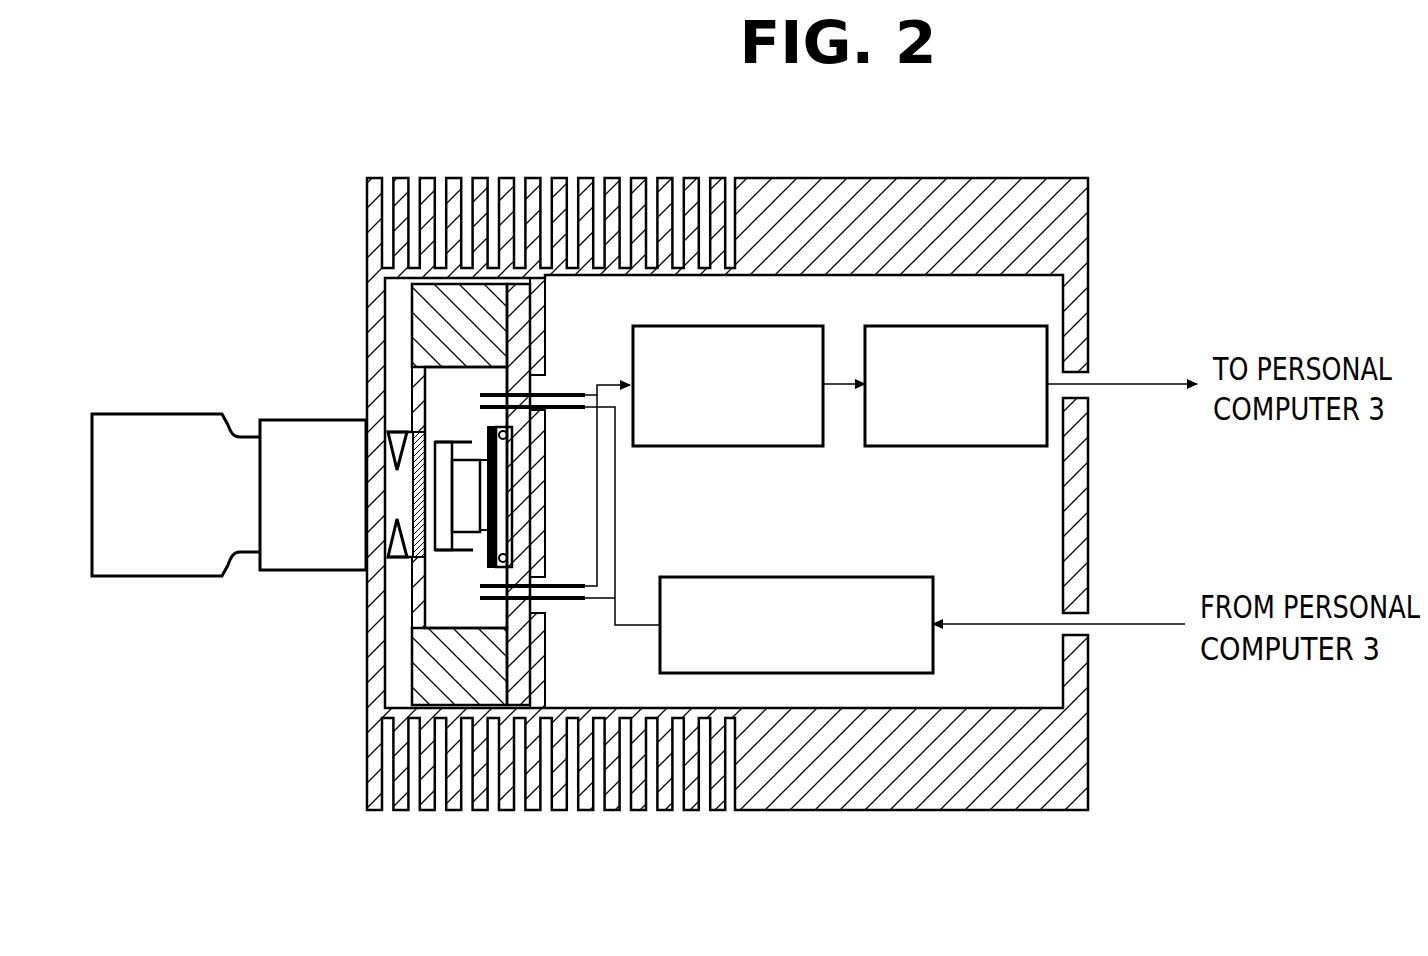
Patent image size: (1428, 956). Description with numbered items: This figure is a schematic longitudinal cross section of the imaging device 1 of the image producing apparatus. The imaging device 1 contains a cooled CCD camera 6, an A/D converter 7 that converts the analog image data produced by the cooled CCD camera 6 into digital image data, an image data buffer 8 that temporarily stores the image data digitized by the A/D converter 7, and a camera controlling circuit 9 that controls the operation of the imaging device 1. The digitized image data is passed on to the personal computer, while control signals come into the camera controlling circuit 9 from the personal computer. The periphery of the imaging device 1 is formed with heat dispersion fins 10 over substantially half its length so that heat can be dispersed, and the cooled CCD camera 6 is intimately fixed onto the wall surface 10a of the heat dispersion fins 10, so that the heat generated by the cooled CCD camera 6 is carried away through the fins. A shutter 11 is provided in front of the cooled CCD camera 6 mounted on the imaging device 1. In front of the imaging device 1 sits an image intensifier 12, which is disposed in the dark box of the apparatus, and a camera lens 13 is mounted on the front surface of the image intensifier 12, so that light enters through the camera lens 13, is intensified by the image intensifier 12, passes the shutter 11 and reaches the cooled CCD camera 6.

The imaging device 1 is at (1112, 213).
The cooled CCD camera 6 is at (400, 340).
The A/D converter 7 is at (783, 438).
The image data buffer 8 is at (997, 437).
The camera controlling circuit 9 is at (935, 648).
The heat dispersion fins 10 is at (500, 167).
The wall surface 10a is at (545, 309).
The shutter 11 is at (400, 670).
The image intensifier 12 is at (305, 540).
The camera lens 13 is at (165, 543).